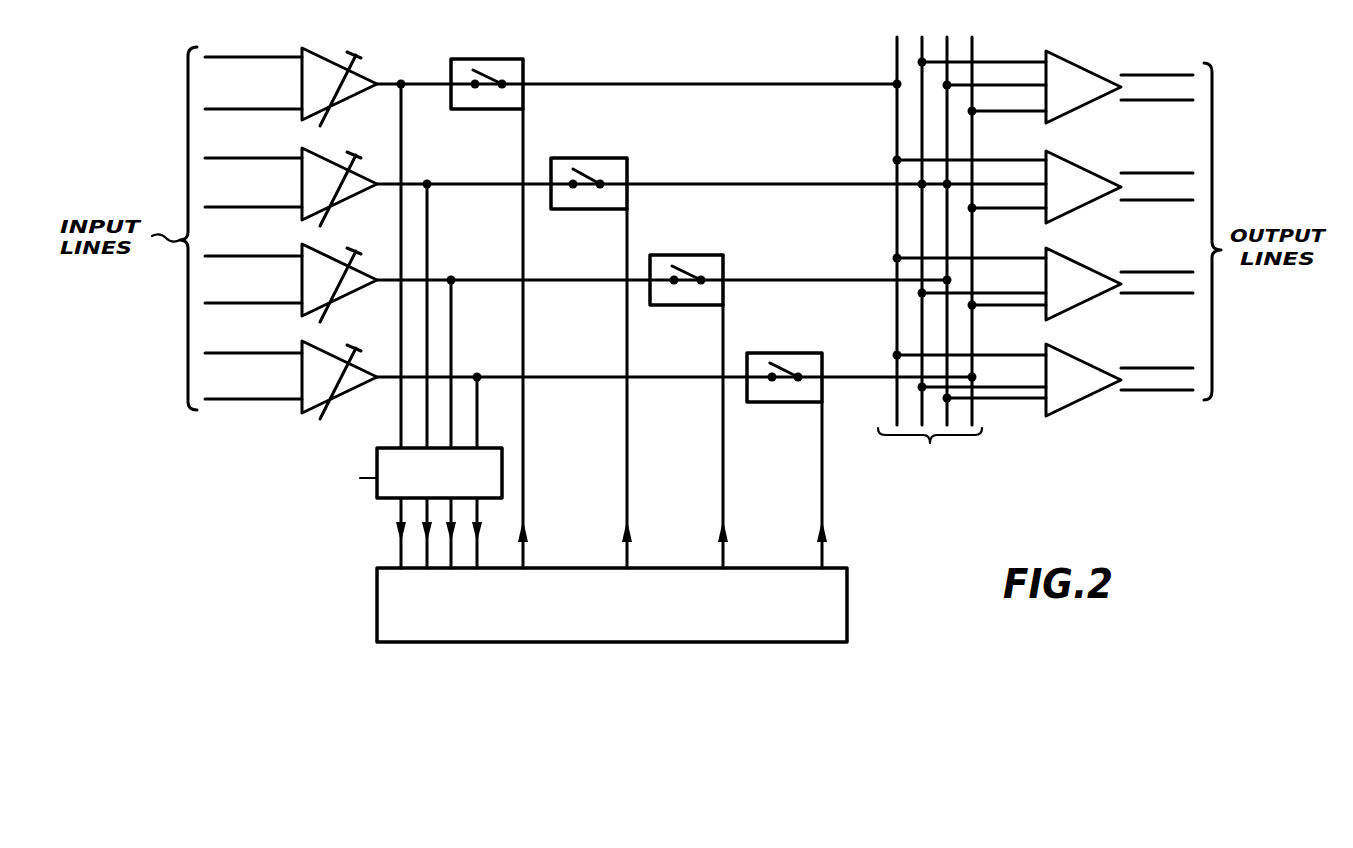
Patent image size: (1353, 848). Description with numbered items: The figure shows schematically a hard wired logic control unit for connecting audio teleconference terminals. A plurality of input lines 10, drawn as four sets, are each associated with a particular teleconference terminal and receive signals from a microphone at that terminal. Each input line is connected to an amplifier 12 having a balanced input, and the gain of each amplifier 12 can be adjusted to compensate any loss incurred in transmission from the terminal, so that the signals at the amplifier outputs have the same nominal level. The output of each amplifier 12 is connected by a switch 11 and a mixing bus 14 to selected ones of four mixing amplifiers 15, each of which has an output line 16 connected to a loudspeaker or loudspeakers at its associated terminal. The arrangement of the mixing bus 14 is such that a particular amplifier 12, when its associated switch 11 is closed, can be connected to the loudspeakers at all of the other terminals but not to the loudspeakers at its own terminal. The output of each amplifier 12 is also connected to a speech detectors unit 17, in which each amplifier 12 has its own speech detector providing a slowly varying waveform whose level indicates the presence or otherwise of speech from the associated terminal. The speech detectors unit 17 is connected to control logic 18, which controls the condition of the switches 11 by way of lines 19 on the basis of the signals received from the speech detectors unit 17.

The input lines 10 is at (260, 86).
The switch 11 is at (488, 109).
The amplifier 12 is at (348, 97).
The mixing bus 14 is at (905, 408).
The mixing amplifier 15 is at (1068, 97).
The output line 16 is at (1162, 88).
The speech detectors unit 17 is at (369, 326).
The control logic 18 is at (612, 644).
The lines 19 is at (625, 468).